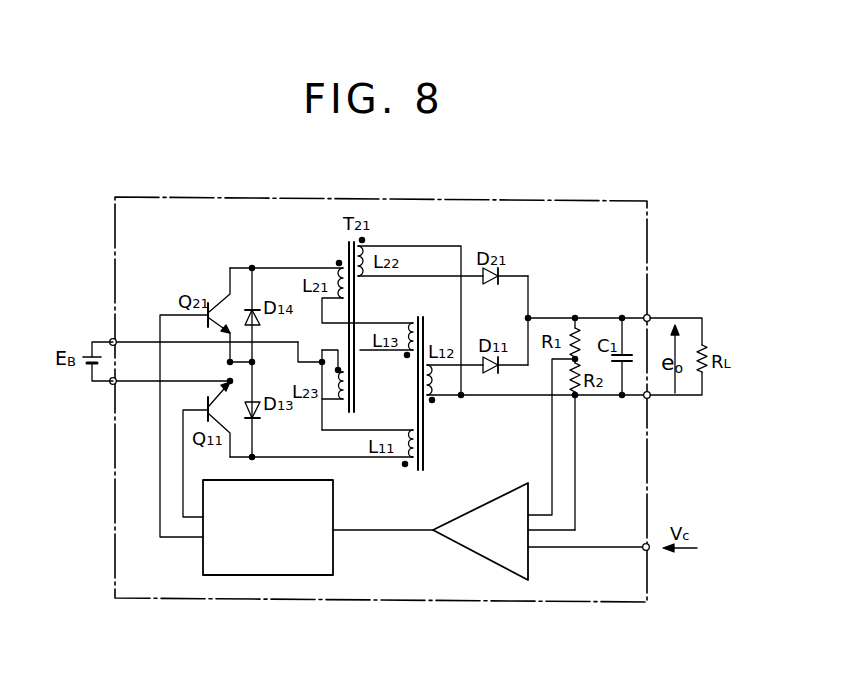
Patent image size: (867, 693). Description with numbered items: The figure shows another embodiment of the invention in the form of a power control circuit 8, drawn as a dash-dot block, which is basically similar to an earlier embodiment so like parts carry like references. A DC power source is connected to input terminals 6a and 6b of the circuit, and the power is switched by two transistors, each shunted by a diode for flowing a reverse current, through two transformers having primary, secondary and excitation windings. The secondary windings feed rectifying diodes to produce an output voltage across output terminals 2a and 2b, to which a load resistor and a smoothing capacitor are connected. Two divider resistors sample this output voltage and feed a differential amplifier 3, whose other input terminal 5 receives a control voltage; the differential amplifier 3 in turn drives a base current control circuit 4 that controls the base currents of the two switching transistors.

The power control circuit 8 is at (573, 200).
The input terminal 6a is at (109, 339).
The input terminal 6b is at (110, 384).
The output terminal 2a is at (650, 314).
The output terminal 2b is at (650, 399).
The differential amplifier 3 is at (478, 504).
The base current control circuit 4 is at (334, 500).
The input terminal 5 is at (649, 551).